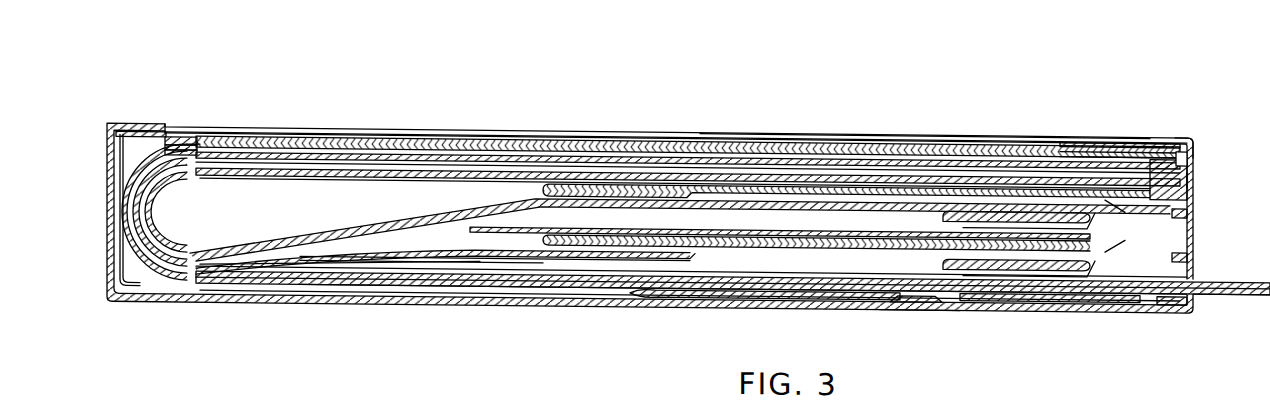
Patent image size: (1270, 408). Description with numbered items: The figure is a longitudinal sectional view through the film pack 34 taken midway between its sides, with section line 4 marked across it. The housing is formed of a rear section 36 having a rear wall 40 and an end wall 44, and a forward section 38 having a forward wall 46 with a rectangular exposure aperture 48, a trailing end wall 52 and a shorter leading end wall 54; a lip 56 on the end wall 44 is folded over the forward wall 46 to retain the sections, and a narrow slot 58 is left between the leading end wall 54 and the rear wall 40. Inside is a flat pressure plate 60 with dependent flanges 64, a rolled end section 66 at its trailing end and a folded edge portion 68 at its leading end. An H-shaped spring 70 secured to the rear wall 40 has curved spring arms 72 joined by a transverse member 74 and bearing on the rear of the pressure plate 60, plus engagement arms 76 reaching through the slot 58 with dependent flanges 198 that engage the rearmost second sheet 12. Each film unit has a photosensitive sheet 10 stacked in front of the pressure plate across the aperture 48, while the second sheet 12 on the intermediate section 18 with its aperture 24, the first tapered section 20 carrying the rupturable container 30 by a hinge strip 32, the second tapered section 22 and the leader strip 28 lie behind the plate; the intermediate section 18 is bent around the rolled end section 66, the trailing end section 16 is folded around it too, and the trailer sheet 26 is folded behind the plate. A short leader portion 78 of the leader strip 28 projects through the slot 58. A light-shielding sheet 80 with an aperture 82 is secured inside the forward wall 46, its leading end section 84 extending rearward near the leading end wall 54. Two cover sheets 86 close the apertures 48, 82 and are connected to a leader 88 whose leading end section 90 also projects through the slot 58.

The photosensitive sheet 10 is at (490, 164).
The second sheet 12 is at (560, 262).
The trailing end section 16 is at (165, 136).
The intermediate section 18 is at (520, 256).
The first tapered section 20 is at (770, 292).
The second tapered section 22 is at (162, 198).
The aperture 24 is at (240, 263).
The trailer sheet 26 is at (1193, 167).
The leader strip 28 is at (580, 183).
The rupturable container 30 is at (1065, 255).
The hinge strip 32 is at (1100, 245).
The film pack 34 is at (905, 113).
The rear section 36 is at (311, 304).
The forward section 38 is at (394, 119).
The rear wall 40 is at (490, 282).
The end wall 44 is at (108, 291).
The forward wall 46 is at (195, 137).
The exposure aperture 48 is at (197, 144).
The trailing end wall 52 is at (122, 281).
The leading end wall 54 is at (1195, 131).
The lip 56 is at (135, 118).
The slot 58 is at (1188, 292).
The pressure plate 60 is at (725, 198).
The flanges 64 is at (265, 218).
The rolled end section 66 is at (158, 234).
The folded edge portion 68 is at (1150, 177).
The spring 70 is at (900, 306).
The spring arms 72 is at (820, 296).
The transverse member 74 is at (935, 292).
The engagement arms 76 is at (985, 282).
The leader portion 78 is at (1222, 268).
The light-shielding sheet 80 is at (182, 134).
The aperture 82 is at (200, 150).
The leading end section 84 is at (1185, 199).
The cover sheets 86 is at (430, 147).
The leader 88 is at (382, 293).
The leading end section 90 is at (1220, 282).
The dependent flanges 198 is at (1183, 256).
The section line 4 is at (630, 76).